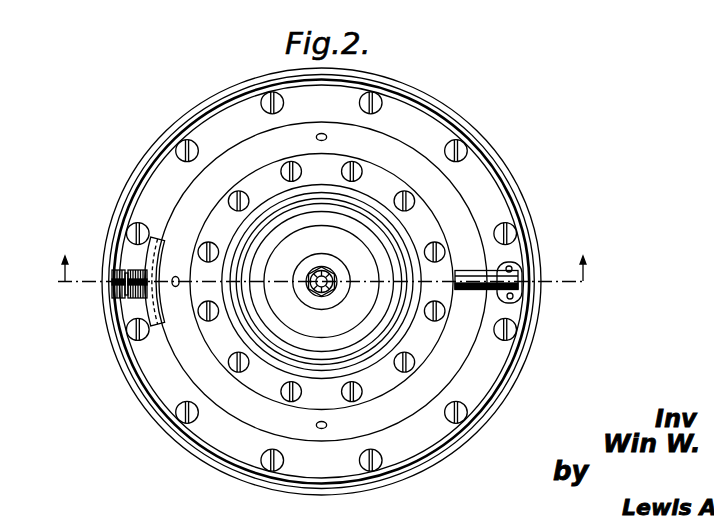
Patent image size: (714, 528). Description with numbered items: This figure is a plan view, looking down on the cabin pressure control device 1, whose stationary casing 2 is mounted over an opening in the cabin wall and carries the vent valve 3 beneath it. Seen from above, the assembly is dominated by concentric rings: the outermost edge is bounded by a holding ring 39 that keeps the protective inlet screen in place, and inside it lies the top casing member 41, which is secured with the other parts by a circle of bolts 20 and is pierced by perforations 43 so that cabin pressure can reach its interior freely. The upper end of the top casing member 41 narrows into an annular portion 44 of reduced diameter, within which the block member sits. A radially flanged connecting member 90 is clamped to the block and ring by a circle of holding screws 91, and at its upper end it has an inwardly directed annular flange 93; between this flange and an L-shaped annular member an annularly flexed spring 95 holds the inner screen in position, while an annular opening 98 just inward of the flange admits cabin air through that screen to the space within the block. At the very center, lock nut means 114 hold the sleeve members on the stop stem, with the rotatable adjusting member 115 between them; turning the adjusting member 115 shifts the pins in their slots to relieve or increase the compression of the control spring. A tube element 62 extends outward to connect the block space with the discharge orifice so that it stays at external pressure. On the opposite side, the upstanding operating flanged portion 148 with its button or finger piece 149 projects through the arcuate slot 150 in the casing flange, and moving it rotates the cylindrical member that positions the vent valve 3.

The device 1 is at (490, 134).
The casing 2 is at (180, 182).
The vent valve 3 is at (322, 256).
The bolts 20 is at (265, 105).
The holding ring 39 is at (335, 282).
The top casing member 41 is at (460, 374).
The perforations 43 is at (319, 134).
The annular portion 44 is at (440, 225).
The tube element 62 is at (516, 301).
The connecting member 90 is at (428, 320).
The holding screws 91 is at (283, 390).
The annular flange 93 is at (243, 247).
The annularly flexed spring 95 is at (270, 224).
The annular opening 98 is at (331, 253).
The lock nut means 114 is at (318, 266).
The adjusting member 115 is at (353, 321).
The operating flanged portion 148 is at (142, 307).
The button or finger piece 149 is at (116, 298).
The arcuate slot 150 is at (163, 351).